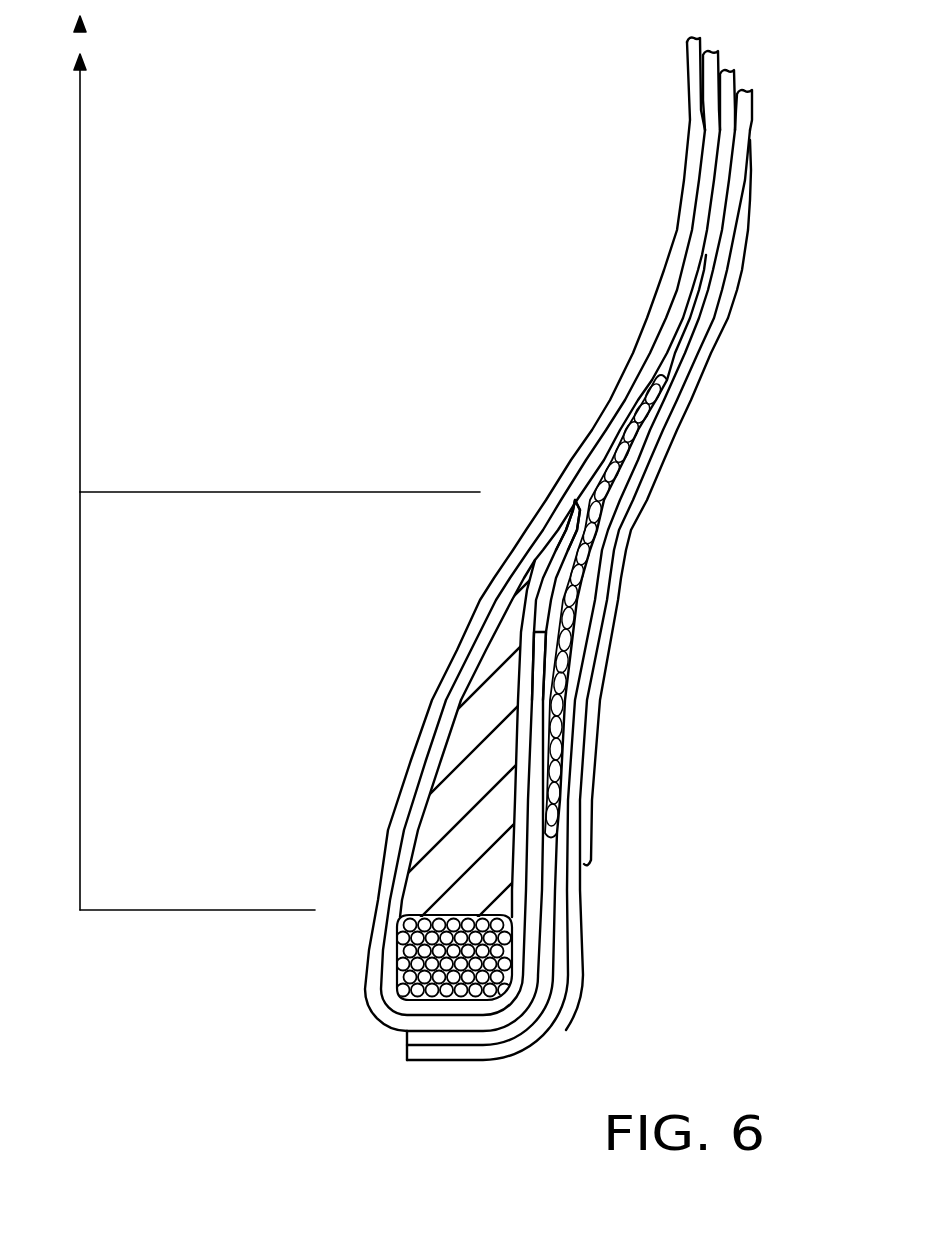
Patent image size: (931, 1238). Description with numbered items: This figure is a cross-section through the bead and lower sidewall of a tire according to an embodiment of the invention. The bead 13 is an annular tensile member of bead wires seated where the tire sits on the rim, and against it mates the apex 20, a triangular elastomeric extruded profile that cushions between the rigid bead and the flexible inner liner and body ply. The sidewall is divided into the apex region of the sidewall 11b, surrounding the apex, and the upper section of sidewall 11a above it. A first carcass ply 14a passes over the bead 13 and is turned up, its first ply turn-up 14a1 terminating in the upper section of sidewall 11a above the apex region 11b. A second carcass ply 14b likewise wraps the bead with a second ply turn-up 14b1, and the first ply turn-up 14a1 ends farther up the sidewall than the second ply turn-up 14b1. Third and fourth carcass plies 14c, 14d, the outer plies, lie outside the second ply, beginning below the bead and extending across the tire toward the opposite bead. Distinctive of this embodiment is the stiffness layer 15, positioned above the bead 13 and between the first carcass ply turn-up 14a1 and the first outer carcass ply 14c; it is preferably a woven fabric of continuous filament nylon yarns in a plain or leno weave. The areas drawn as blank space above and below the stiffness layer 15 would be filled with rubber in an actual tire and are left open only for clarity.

The upper section of sidewall 11a is at (251, 254).
The apex region of the sidewall 11b is at (170, 701).
The bead 13 is at (400, 955).
The first carcass ply 14a is at (688, 95).
The first ply turn-up 14a1 is at (602, 470).
The second carcass ply 14b is at (706, 183).
The second ply turn-up 14b1 is at (541, 630).
The third carcass ply 14c is at (720, 216).
The fourth carcass ply 14d is at (745, 148).
The stiffness layer 15 is at (586, 583).
The apex 20 is at (465, 812).